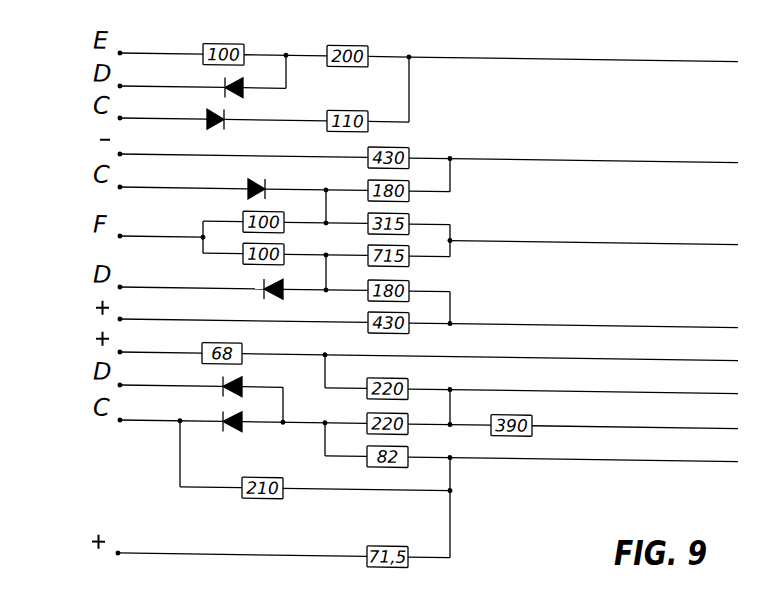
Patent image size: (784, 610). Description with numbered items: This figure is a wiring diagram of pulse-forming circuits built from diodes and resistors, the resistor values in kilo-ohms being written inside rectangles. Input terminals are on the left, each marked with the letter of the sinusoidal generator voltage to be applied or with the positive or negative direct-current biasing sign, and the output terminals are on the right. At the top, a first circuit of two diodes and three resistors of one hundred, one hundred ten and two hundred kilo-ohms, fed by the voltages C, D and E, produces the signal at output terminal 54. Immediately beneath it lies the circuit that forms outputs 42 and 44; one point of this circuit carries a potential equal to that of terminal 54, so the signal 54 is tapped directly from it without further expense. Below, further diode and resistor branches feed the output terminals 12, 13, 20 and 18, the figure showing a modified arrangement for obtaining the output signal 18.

The output terminal 54 is at (596, 151).
The output terminal 42 is at (616, 162).
The output terminal 44 is at (616, 327).
The output terminal 12 is at (554, 358).
The output terminal 13 is at (595, 392).
The output terminal 20 is at (657, 428).
The output terminal 18 is at (595, 460).